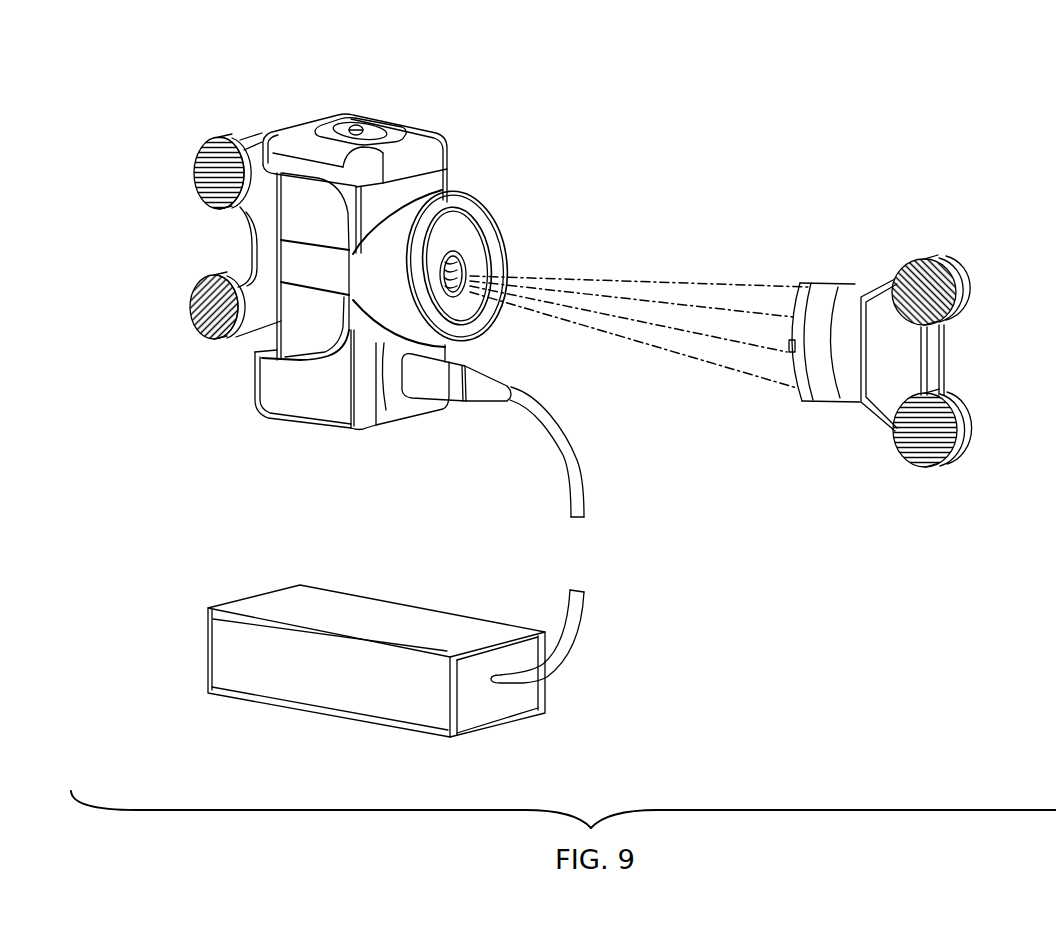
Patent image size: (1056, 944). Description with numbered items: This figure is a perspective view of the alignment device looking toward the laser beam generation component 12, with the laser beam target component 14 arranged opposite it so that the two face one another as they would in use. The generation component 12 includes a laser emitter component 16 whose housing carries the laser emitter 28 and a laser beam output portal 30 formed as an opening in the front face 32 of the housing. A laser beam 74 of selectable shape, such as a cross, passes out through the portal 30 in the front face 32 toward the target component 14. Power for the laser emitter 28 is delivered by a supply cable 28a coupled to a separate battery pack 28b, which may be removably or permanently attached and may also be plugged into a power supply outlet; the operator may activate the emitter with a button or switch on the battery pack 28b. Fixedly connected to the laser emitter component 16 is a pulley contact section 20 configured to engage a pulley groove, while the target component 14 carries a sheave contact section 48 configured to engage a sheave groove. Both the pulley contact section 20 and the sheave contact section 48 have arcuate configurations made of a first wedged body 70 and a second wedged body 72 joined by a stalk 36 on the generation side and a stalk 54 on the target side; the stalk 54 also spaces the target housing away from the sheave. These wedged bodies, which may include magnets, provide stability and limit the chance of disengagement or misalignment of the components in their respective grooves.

The laser beam generation component 12 is at (339, 92).
The laser beam target component 14 is at (864, 193).
The laser emitter component 16 is at (297, 403).
The pulley contact section 20 is at (231, 410).
The laser emitter 28 is at (281, 326).
The supply cable 28a is at (575, 512).
The battery pack 28b is at (293, 602).
The laser beam output portal 30 is at (460, 270).
The front face 32 is at (476, 240).
The stalk 36 is at (250, 243).
The sheave contact section 48 is at (875, 450).
The stalk 54 is at (932, 357).
The first wedged body 70 is at (192, 172).
The second wedged body 72 is at (190, 308).
The laser beam 74 is at (620, 278).